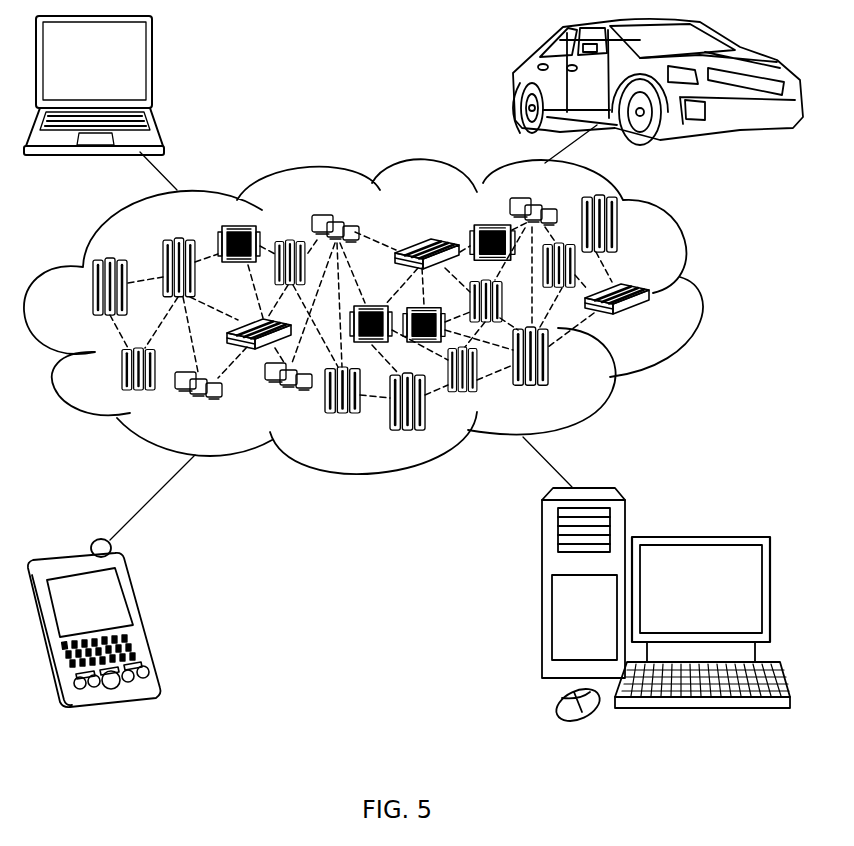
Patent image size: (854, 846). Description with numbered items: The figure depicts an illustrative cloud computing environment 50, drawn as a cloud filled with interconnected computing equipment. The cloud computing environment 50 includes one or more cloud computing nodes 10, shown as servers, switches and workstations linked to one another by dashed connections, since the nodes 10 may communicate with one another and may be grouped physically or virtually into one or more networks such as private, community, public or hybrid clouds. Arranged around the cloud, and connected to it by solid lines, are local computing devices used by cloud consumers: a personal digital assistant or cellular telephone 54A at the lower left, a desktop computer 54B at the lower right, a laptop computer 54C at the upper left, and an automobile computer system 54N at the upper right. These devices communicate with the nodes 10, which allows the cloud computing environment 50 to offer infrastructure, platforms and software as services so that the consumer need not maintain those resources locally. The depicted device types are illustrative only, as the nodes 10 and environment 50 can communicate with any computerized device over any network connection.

The cloud computing nodes 10 is at (660, 322).
The cloud computing environment 50 is at (697, 297).
The personal digital assistant (PDA) or cellular telephone 54A is at (143, 614).
The desktop computer 54B is at (700, 535).
The laptop computer 54C is at (152, 70).
The automobile computer system 54N is at (515, 80).